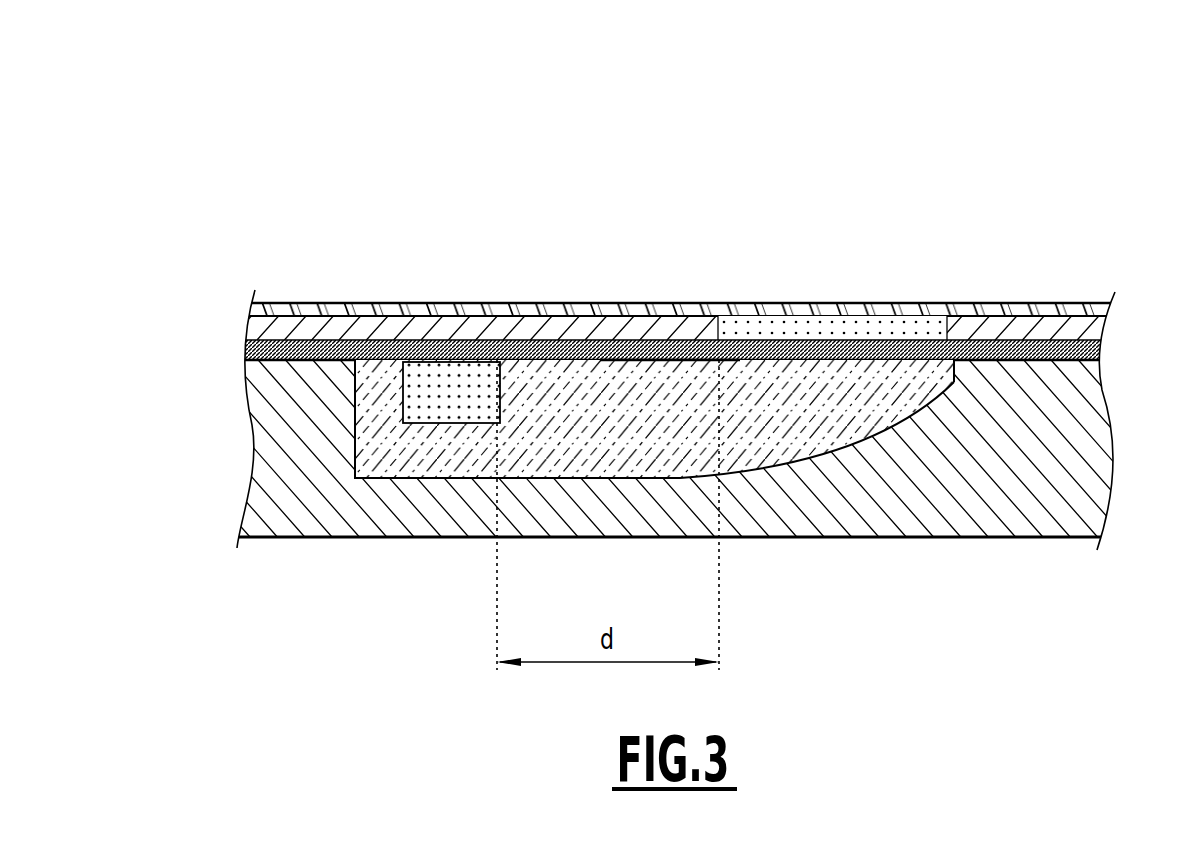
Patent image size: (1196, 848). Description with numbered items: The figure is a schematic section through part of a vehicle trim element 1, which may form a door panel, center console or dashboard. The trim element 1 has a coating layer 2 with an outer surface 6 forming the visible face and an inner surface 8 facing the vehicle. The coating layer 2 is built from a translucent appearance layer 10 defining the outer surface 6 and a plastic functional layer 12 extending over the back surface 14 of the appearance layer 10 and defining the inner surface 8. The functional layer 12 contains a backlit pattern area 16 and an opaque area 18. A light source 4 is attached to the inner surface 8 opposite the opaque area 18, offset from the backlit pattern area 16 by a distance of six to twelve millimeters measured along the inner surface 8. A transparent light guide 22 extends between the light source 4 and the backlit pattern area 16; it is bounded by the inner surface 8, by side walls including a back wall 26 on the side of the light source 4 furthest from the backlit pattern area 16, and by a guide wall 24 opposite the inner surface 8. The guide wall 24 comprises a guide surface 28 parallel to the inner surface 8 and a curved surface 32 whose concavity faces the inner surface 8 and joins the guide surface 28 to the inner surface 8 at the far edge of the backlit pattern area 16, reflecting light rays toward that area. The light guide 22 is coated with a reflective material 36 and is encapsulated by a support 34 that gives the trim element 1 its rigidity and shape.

The trim element 1 is at (304, 228).
The coating layer 2 is at (242, 355).
The light source 4 is at (422, 398).
The outer surface 6 is at (662, 308).
The inner surface 8 is at (668, 362).
The appearance layer 10 is at (964, 307).
The functional layer 12 is at (1083, 333).
The back surface 14 is at (850, 362).
The backlit pattern area 16 is at (873, 330).
The opaque area 18 is at (468, 323).
The light guide 22 is at (558, 447).
The guide wall 24 is at (462, 478).
The back wall 26 is at (355, 432).
The guide surface 28 is at (362, 478).
The curved surface 32 is at (843, 443).
The support 34 is at (1030, 490).
The reflective material 36 is at (590, 478).